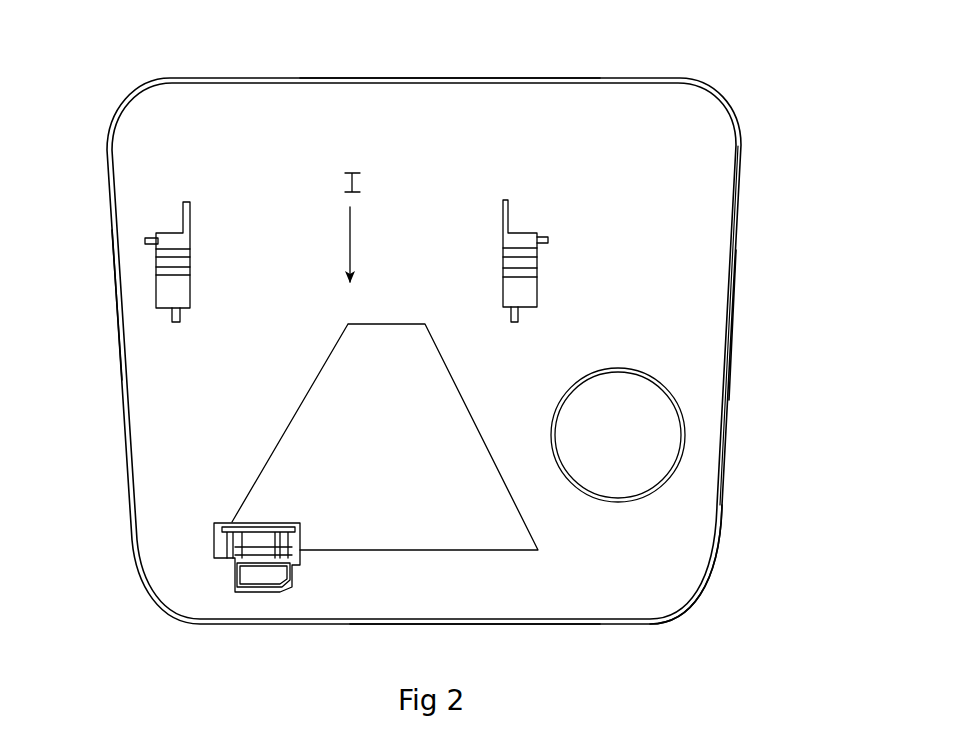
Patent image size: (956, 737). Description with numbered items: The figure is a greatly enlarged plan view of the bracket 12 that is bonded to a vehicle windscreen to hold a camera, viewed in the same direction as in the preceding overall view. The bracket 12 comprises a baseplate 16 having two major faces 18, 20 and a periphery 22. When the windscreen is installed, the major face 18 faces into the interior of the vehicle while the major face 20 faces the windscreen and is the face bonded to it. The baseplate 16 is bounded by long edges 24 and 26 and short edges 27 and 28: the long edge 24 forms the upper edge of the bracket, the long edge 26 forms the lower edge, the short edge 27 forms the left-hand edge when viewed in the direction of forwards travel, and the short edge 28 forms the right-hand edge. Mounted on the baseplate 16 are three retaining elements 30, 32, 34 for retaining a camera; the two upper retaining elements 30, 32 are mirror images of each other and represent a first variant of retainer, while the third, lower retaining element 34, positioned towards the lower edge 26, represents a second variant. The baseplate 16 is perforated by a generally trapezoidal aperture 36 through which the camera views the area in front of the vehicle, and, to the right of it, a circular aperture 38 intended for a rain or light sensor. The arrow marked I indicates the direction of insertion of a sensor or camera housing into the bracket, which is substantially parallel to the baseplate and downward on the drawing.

The bracket 12 is at (744, 71).
The baseplate 16 is at (722, 157).
The major face 18 is at (722, 236).
The major face 20 is at (711, 268).
The periphery 22 is at (726, 556).
The long edge 24 is at (416, 75).
The long edge 26 is at (514, 629).
The short edge 27 is at (112, 364).
The short edge 28 is at (746, 358).
The retaining element 30 is at (201, 254).
The retaining element 32 is at (496, 249).
The retaining element 34 is at (204, 553).
The trapezoidal aperture 36 is at (398, 462).
The circular aperture 38 is at (632, 452).